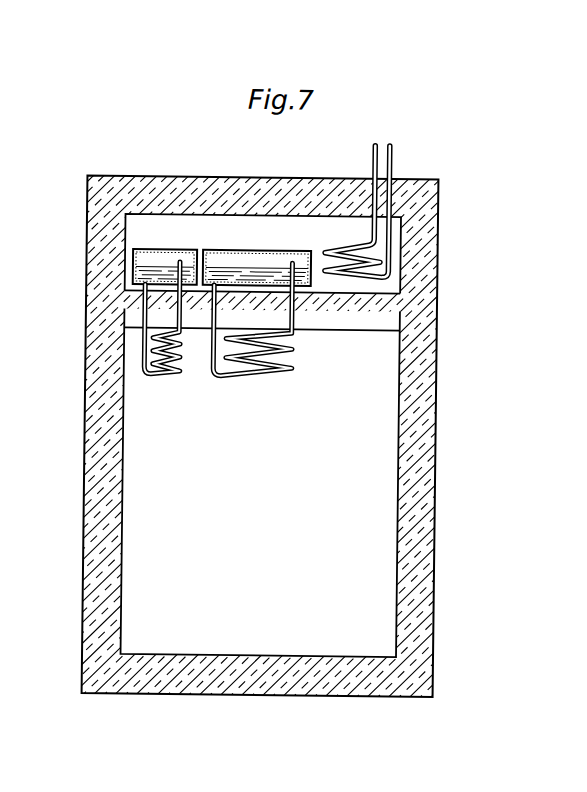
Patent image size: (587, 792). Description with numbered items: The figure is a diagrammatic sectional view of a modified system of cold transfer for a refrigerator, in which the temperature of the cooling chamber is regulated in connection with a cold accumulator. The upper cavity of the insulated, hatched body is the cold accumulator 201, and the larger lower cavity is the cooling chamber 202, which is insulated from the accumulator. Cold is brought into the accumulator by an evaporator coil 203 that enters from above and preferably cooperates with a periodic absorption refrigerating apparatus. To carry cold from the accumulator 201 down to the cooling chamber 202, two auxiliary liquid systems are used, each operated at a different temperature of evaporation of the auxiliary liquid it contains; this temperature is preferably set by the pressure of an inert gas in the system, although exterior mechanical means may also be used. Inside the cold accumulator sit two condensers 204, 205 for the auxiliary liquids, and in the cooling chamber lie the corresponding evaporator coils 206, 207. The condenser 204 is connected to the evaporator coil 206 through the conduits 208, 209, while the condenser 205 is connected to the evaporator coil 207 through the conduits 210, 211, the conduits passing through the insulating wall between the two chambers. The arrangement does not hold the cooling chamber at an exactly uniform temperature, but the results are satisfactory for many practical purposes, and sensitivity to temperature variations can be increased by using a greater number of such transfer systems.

The cold accumulator 201 is at (388, 282).
The cooling chamber 202 is at (378, 479).
The evaporator coil 203 is at (340, 251).
The condenser 204 is at (166, 251).
The condenser 205 is at (252, 258).
The evaporator coil 206 is at (171, 373).
The evaporator coil 207 is at (276, 375).
The conduit 208 is at (146, 303).
The conduit 209 is at (147, 314).
The conduit 210 is at (216, 334).
The conduit 211 is at (294, 305).